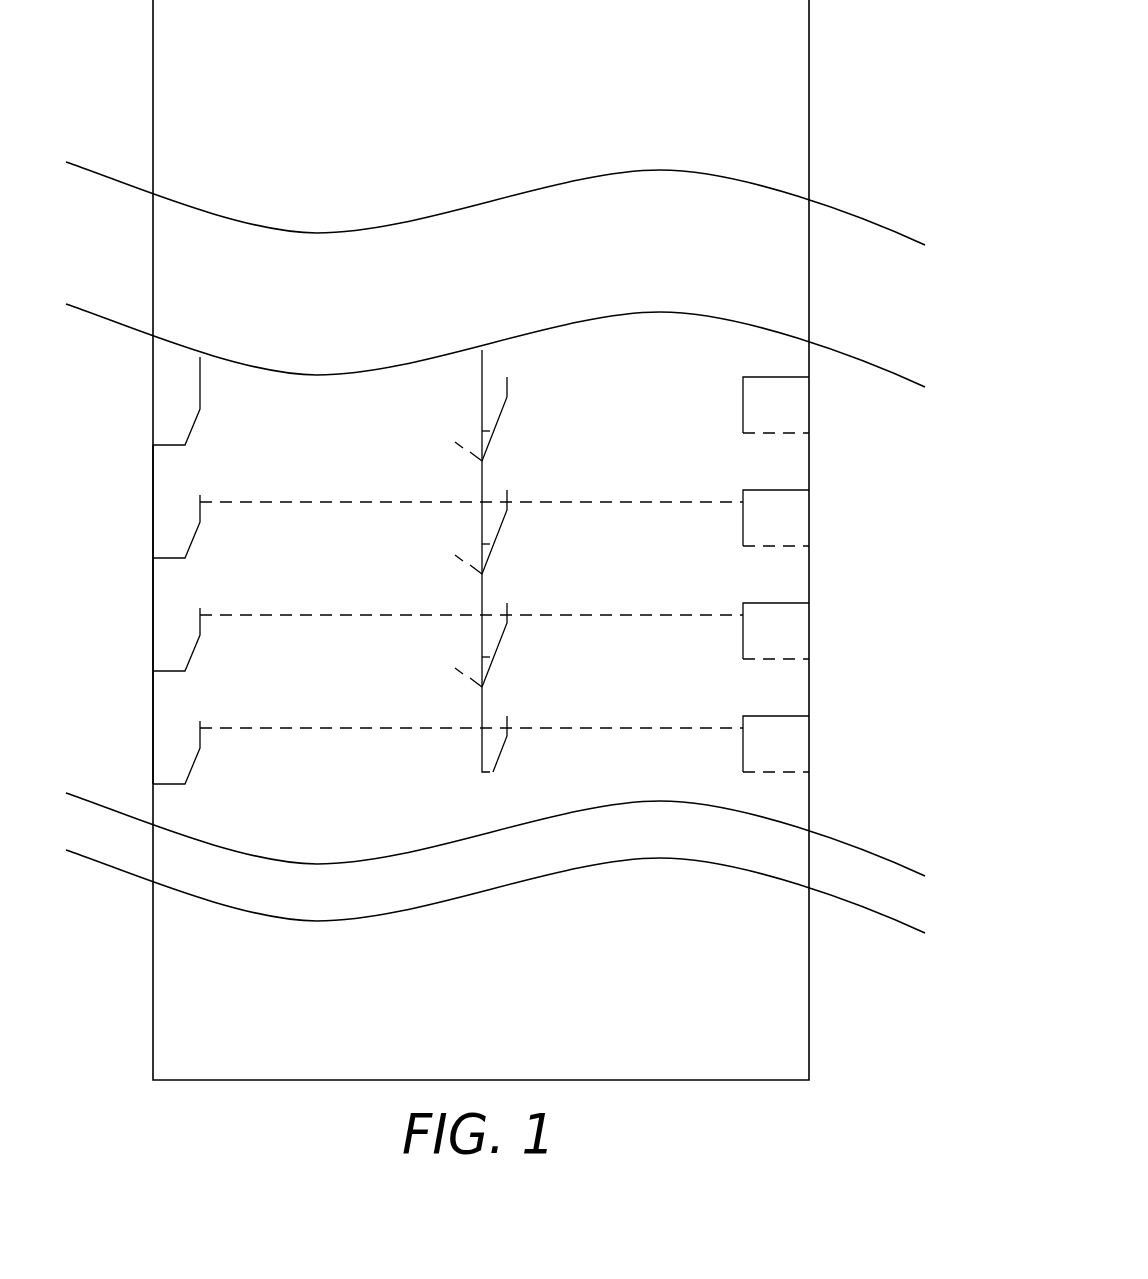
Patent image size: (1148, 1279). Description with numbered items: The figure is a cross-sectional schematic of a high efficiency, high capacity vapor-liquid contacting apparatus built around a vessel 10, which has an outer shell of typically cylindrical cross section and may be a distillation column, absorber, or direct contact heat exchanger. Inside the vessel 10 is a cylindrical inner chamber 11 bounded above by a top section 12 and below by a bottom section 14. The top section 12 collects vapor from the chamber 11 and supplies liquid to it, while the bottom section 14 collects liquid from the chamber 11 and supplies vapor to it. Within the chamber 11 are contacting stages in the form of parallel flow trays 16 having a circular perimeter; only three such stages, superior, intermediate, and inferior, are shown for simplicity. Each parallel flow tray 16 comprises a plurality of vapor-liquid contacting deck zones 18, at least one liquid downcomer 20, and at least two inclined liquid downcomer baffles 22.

The vessel 10 is at (123, 72).
The chamber 11 is at (618, 357).
The top section 12 is at (501, 96).
The bottom section 14 is at (501, 1016).
The parallel flow tray 16 is at (135, 495).
The vapor-liquid contacting deck zone 18 is at (343, 502).
The liquid downcomer 20 is at (193, 427).
The inclined liquid downcomer baffle 22 is at (490, 440).